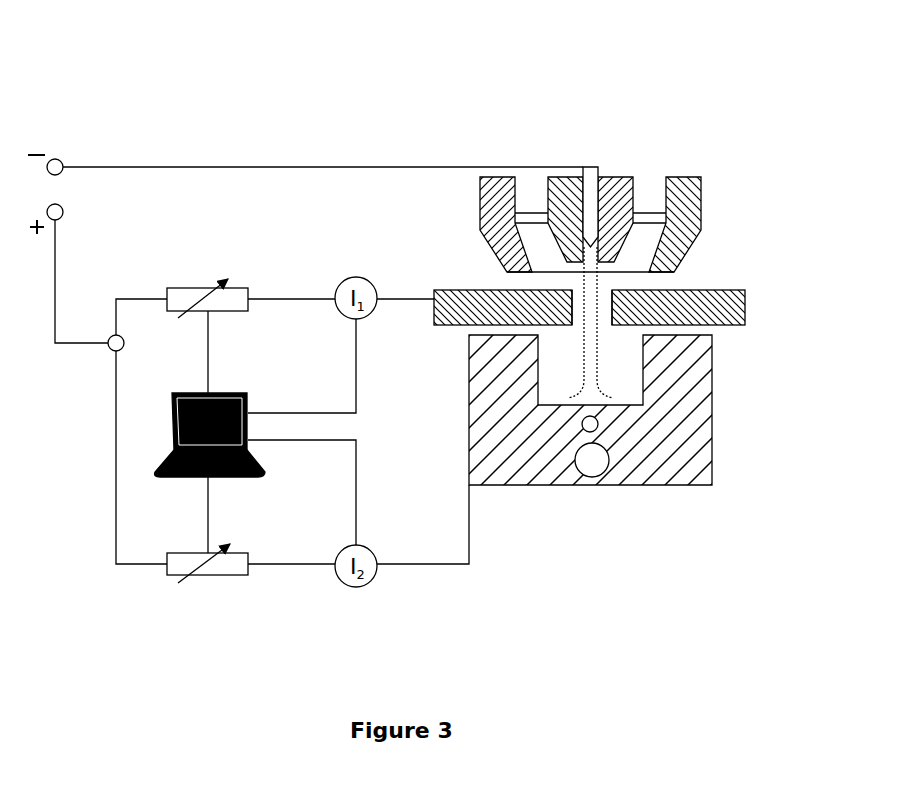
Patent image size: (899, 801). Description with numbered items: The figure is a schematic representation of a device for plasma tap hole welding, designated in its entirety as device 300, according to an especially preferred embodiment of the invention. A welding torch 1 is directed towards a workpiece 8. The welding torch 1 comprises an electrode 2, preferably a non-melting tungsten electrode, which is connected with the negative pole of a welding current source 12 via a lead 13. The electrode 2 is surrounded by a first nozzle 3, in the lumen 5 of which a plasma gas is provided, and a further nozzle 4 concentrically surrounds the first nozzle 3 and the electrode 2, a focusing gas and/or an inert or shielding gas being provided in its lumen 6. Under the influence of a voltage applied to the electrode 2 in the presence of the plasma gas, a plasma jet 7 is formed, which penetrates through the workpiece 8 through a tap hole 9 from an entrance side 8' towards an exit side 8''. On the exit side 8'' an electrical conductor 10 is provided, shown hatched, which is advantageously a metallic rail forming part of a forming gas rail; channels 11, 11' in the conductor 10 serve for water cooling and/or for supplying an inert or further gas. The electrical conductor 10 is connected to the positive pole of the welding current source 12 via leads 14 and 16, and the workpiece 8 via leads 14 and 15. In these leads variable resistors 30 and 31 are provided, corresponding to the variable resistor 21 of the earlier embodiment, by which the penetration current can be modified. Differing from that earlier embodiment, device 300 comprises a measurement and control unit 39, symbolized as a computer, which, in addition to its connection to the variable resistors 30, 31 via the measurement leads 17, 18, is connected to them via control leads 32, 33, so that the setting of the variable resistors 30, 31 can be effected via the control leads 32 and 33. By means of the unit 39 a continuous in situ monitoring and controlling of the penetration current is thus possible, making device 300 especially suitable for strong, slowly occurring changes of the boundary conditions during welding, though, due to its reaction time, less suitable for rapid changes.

The device for plasma tap hole welding 300 is at (376, 90).
The welding torch 1 is at (542, 174).
The electrode 2 is at (597, 180).
The first nozzle 3 is at (642, 180).
The further nozzle 4 is at (701, 190).
The lumen of first nozzle 5 is at (605, 180).
The lumen of further nozzle 6 is at (527, 185).
The plasma jet 7 is at (592, 350).
The workpiece 8 is at (570, 283).
The entrance side 8' is at (751, 220).
The exit side 8'' is at (754, 395).
The tap hole 9 is at (612, 290).
The electrical conductor 10 is at (525, 484).
The channel 11 is at (594, 499).
The channel 11' is at (624, 480).
The welding current source 12 is at (73, 146).
The lead 13 is at (192, 167).
The lead 14 is at (56, 272).
The lead 15 is at (135, 298).
The lead 16 is at (155, 565).
The measurement lead 17 is at (355, 477).
The measurement lead 18 is at (357, 341).
The variable resistor 21 is at (291, 317).
The variable resistor 30 is at (238, 283).
The variable resistor 31 is at (233, 577).
The control lead 32 is at (212, 315).
The control lead 33 is at (207, 480).
The measurement and control unit 39 is at (227, 393).